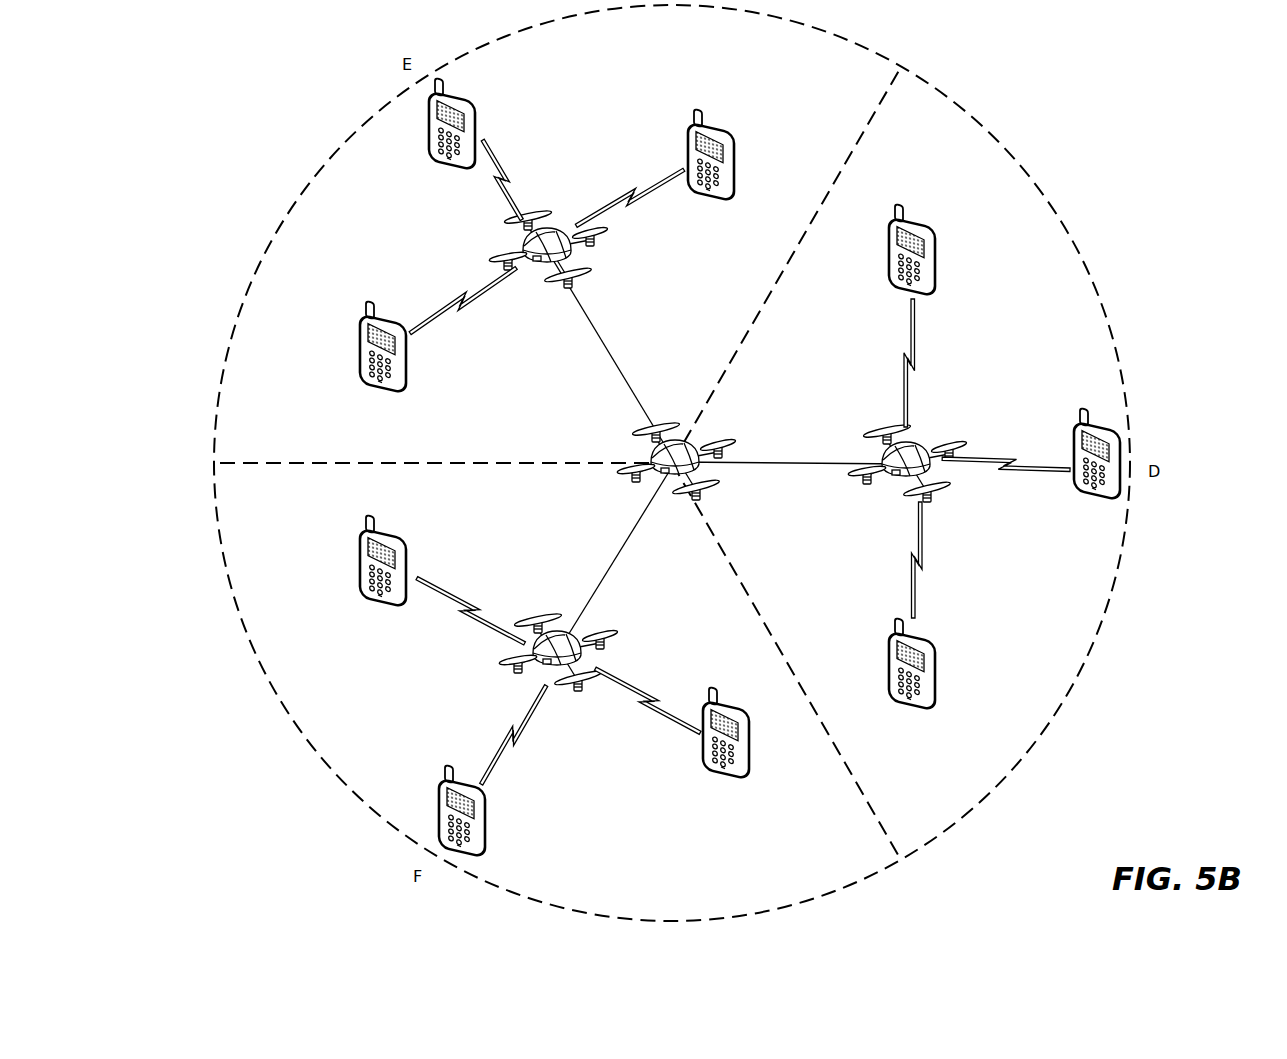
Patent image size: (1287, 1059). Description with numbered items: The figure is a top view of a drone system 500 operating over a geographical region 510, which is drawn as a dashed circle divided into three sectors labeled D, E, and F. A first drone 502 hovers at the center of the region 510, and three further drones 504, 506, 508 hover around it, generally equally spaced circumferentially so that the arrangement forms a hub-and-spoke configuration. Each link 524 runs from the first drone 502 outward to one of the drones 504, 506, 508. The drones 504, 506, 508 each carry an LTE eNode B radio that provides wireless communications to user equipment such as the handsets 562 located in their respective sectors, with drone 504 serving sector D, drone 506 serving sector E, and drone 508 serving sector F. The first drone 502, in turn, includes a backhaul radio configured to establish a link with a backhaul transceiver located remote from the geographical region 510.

The system 500 is at (212, 127).
The first drone 502 is at (676, 444).
The drone 504 is at (922, 444).
The drone 506 is at (528, 229).
The drone 508 is at (558, 678).
The geographical region 510 is at (1062, 632).
The link 524 is at (605, 345).
The handset 562 is at (740, 154).